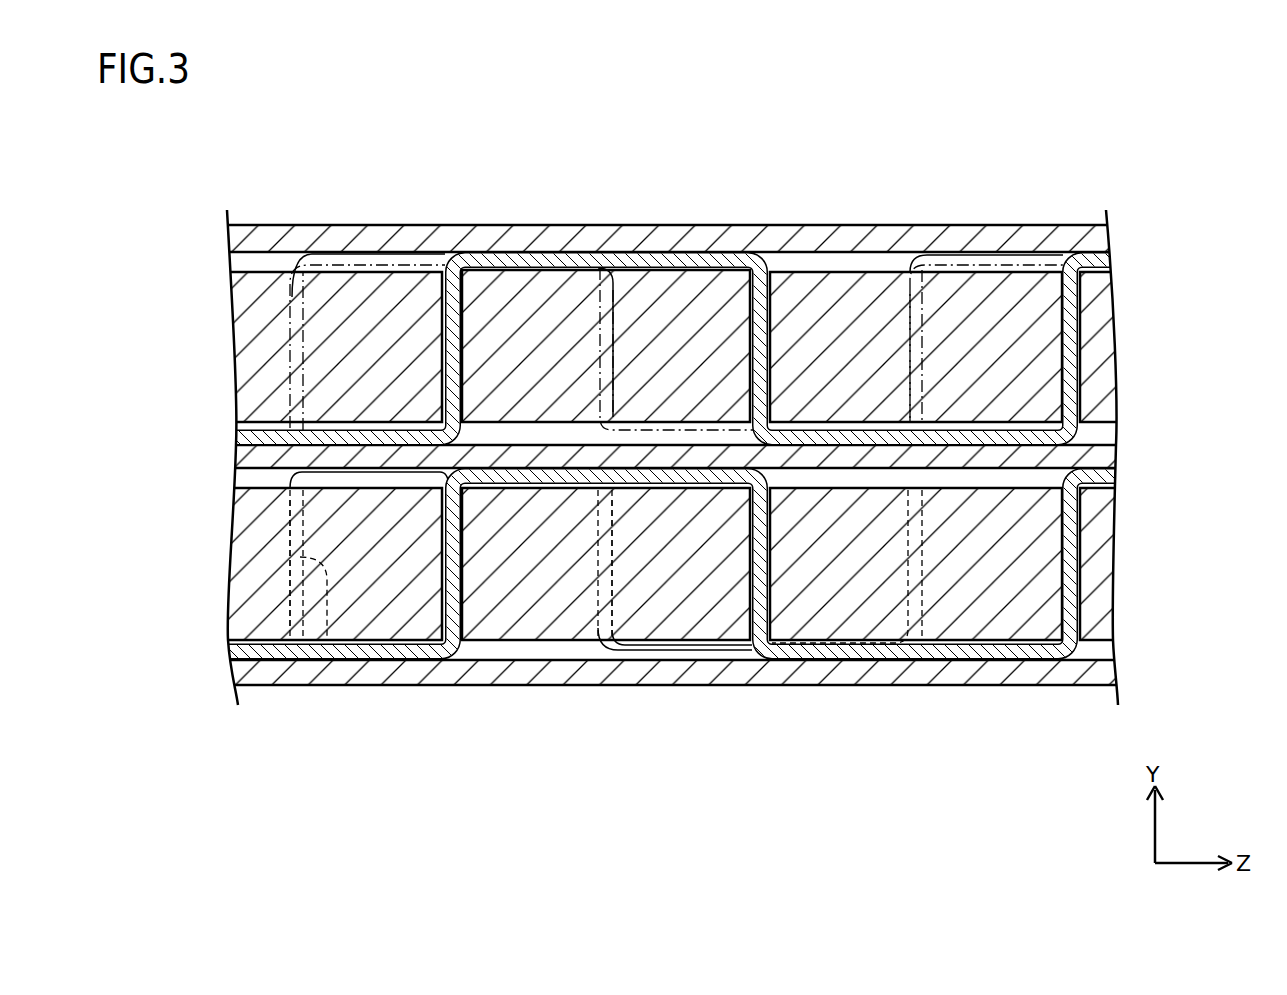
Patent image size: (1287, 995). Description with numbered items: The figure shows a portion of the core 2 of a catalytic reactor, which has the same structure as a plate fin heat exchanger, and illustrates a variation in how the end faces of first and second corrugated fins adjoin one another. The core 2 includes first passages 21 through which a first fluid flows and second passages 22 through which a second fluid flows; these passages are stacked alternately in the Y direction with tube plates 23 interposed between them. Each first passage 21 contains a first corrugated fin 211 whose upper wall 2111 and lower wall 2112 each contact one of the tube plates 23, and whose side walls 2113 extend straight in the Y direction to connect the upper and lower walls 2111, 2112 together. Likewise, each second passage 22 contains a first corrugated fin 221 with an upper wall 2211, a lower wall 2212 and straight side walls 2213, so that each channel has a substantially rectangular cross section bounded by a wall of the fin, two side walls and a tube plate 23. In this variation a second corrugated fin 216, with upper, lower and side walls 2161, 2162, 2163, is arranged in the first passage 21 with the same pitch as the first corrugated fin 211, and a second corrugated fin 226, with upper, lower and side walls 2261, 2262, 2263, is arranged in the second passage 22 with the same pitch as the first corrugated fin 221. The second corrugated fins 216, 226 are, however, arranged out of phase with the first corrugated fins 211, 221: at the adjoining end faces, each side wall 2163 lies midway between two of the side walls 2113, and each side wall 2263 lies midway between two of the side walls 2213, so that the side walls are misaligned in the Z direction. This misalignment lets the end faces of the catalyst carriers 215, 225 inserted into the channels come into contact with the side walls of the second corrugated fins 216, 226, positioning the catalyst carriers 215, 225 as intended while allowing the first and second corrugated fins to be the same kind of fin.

The core 2 is at (1100, 166).
The first passage 21 is at (703, 646).
The second passage 22 is at (668, 275).
The tube plate 23 is at (1093, 239).
The first corrugated fin 211 is at (675, 632).
The upper wall 2111 is at (546, 483).
The lower wall 2112 is at (245, 662).
The side wall 2113 is at (442, 563).
The catalyst carrier 215 is at (1036, 625).
The second corrugated fin 216 is at (602, 646).
The upper wall 2161 is at (368, 475).
The lower wall 2162 is at (712, 653).
The side wall 2163 is at (316, 645).
The first corrugated fin 221 is at (640, 276).
The upper wall 2211 is at (568, 257).
The lower wall 2212 is at (240, 436).
The side wall 2213 is at (452, 327).
The catalyst carrier 225 is at (1040, 280).
The second corrugated fin 226 is at (676, 264).
The upper wall 2261 is at (1010, 266).
The lower wall 2262 is at (698, 430).
The side wall 2263 is at (613, 330).